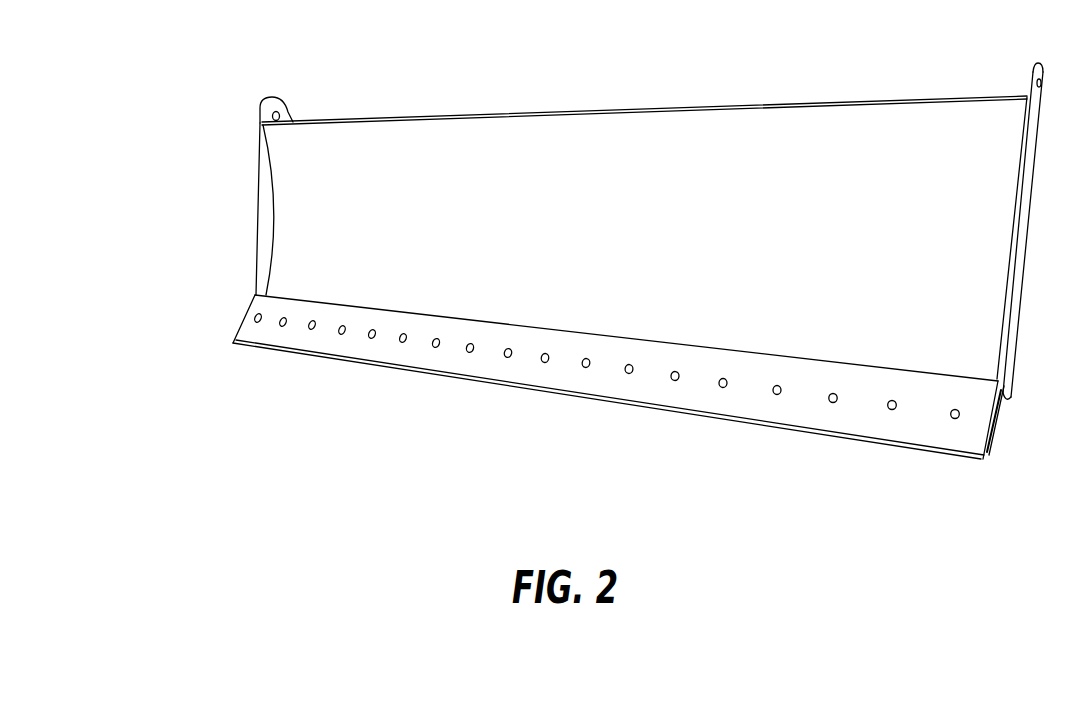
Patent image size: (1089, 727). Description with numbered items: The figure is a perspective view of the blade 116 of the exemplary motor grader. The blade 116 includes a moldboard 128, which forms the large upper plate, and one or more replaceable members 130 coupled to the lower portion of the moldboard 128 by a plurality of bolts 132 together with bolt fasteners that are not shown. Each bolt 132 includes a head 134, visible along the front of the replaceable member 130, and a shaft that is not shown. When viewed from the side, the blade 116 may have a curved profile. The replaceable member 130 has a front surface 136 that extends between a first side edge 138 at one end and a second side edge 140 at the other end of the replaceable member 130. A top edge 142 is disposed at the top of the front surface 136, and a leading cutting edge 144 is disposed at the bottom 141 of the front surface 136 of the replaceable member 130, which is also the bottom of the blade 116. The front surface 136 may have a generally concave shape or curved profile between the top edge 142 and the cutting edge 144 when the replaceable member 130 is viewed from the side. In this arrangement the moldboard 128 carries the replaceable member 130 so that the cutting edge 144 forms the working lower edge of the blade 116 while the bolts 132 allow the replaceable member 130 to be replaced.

The blade 116 is at (291, 61).
The moldboard 128 is at (933, 120).
The replaceable member 130 is at (607, 370).
The bolt 132 is at (783, 378).
The head 134 is at (777, 395).
The front surface 136 is at (413, 357).
The first side edge 138 is at (245, 320).
The second side edge 140 is at (995, 416).
The bottom 141 is at (545, 392).
The top edge 142 is at (387, 308).
The cutting edge 144 is at (480, 377).